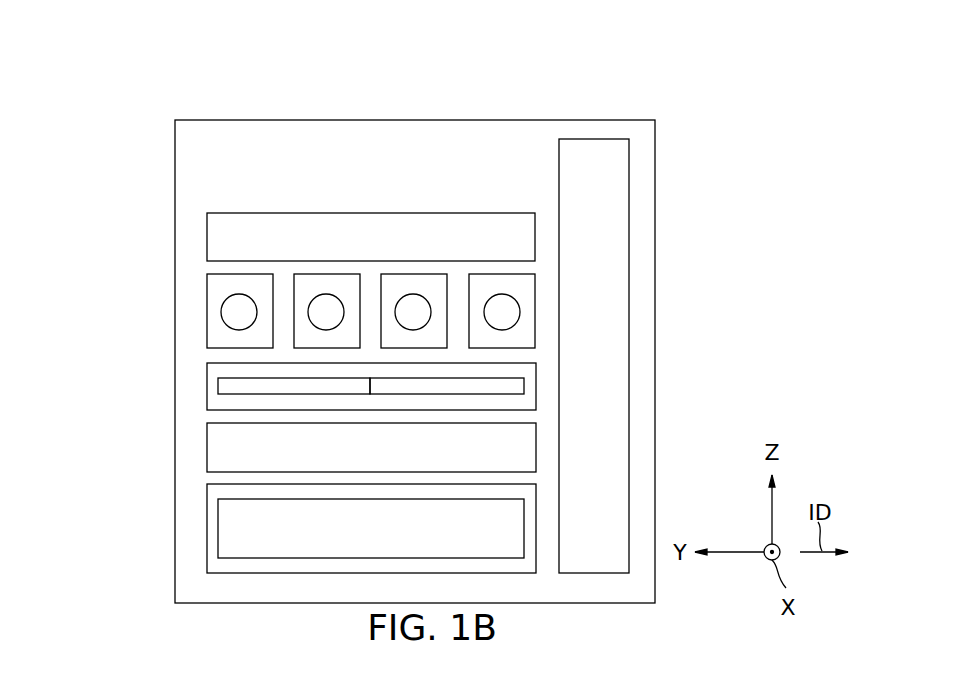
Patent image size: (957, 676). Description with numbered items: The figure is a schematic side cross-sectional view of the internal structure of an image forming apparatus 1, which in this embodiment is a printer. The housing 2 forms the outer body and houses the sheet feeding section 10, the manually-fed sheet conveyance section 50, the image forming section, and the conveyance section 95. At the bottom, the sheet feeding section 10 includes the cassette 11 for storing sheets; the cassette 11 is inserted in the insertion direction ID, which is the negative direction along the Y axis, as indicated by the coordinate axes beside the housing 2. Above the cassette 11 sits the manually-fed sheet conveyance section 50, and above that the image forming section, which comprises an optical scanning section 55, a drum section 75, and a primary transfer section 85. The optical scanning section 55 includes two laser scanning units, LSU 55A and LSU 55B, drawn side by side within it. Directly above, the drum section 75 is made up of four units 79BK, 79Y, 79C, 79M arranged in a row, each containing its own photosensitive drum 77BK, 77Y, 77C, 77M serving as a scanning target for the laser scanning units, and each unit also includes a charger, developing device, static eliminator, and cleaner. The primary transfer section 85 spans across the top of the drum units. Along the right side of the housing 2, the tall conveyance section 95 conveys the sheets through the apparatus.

The image forming apparatus 1 is at (621, 88).
The housing 2 is at (656, 255).
The sheet feeding section 10 is at (320, 540).
The cassette 11 is at (218, 542).
The manually-fed sheet conveyance section 50 is at (207, 445).
The optical scanning section 55 is at (410, 373).
The laser scanning unit 55A is at (524, 386).
The laser scanning unit 55B is at (218, 386).
The drum section 75 is at (345, 194).
The photosensitive drum 77M is at (231, 294).
The photosensitive drum 77C is at (315, 294).
The photosensitive drum 77Y is at (405, 294).
The photosensitive drum 77BK is at (494, 294).
The unit 79M is at (257, 274).
The unit 79C is at (342, 274).
The unit 79Y is at (429, 274).
The unit 79BK is at (518, 274).
The primary transfer section 85 is at (207, 225).
The conveyance section 95 is at (629, 183).